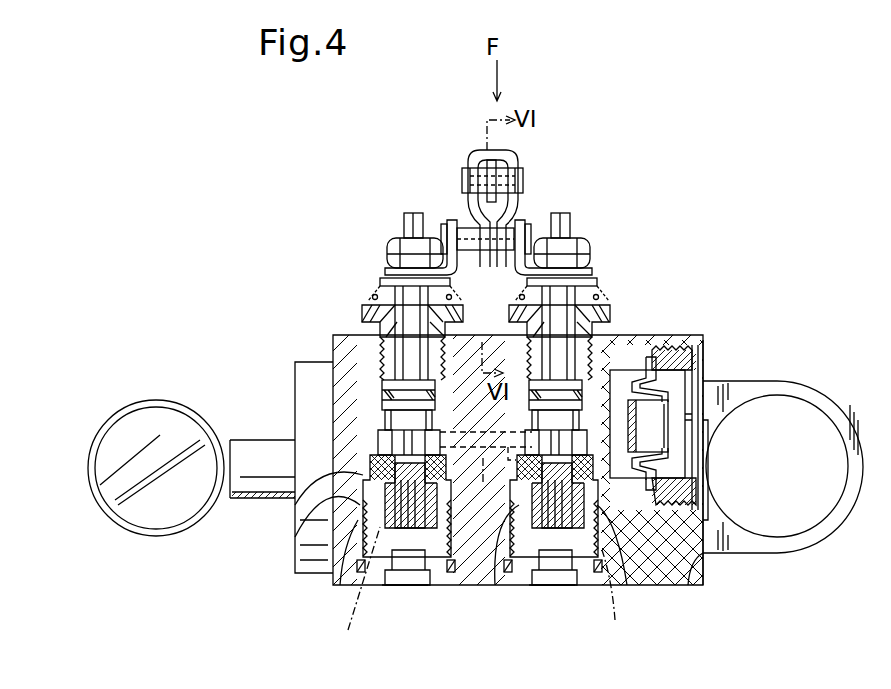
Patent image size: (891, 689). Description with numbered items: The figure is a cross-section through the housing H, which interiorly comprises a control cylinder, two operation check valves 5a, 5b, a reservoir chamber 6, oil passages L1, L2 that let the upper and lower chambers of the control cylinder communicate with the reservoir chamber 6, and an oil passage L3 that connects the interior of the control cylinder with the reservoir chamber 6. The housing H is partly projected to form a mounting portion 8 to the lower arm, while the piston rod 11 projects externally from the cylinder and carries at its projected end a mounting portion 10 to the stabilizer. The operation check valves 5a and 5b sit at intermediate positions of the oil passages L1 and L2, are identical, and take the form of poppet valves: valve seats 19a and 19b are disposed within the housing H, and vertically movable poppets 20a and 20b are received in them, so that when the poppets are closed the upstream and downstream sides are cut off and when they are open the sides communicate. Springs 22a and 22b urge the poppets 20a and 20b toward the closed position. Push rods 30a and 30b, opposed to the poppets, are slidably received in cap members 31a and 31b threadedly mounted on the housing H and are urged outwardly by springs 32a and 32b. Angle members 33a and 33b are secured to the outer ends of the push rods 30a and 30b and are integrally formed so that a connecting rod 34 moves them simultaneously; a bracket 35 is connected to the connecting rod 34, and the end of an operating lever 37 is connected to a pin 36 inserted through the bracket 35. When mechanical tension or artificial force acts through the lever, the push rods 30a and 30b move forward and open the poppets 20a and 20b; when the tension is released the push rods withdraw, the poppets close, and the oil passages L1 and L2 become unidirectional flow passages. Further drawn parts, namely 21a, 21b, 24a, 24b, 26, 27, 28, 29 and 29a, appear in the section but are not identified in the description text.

The operation check valve 5a is at (392, 600).
The operation check valve 5b is at (551, 614).
The reservoir chamber 6 is at (722, 364).
The mounting portion 8 is at (838, 528).
The mounting portion 10 is at (150, 538).
The piston rod 11 is at (250, 440).
The valve seat 19a is at (333, 586).
The valve seat 19b is at (506, 561).
The poppet 20a is at (300, 537).
The poppet 20b is at (635, 562).
The valve seat 21a is at (440, 587).
The valve seat 21b is at (542, 556).
The spring 22a is at (418, 586).
The spring 22b is at (557, 587).
The threaded bore 24a is at (300, 426).
The threaded bore 24b is at (583, 432).
The spring seat 26 is at (708, 492).
The chamber 27 is at (706, 456).
The bellows 28 is at (708, 387).
The plate 29 is at (712, 345).
The plate 29a is at (715, 432).
The push rod 30a is at (390, 403).
The push rod 30b is at (523, 417).
The cap member 31a is at (360, 315).
The cap member 31b is at (591, 333).
The spring 32a is at (378, 287).
The spring 32b is at (583, 257).
The angle member 33a is at (448, 232).
The angle member 33b is at (564, 230).
The connecting rod 34 is at (489, 262).
The bracket 35 is at (520, 172).
The pin 36 is at (478, 160).
The operating lever 37 is at (515, 218).
The housing H is at (692, 588).
The oil passage L1 is at (355, 586).
The oil passage L2 is at (617, 597).
The oil passage L3 is at (486, 466).